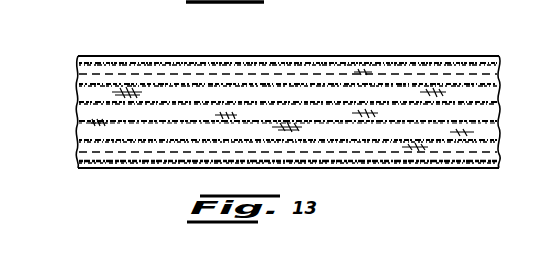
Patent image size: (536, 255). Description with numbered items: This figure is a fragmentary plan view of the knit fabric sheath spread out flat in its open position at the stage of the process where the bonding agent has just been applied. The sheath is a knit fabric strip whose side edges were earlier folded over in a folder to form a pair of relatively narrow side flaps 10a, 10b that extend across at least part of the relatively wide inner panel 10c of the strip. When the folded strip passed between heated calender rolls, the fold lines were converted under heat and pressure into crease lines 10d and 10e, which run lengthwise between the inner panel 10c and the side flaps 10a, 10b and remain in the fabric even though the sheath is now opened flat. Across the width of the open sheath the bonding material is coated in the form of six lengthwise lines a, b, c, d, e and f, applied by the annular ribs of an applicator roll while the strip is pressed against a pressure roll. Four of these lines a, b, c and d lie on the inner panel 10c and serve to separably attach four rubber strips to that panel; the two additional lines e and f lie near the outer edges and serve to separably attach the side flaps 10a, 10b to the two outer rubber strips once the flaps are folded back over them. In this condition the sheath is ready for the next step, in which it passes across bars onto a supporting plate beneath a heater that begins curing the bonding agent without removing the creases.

The side flap 10a is at (137, 169).
The side flap 10b is at (158, 62).
The inner panel 10c is at (293, 92).
The crease line 10d is at (447, 152).
The crease line 10e is at (449, 73).
The line of bonding material a is at (78, 85).
The line of bonding material b is at (78, 104).
The line of bonding material c is at (78, 121).
The line of bonding material d is at (78, 141).
The line of bonding material e is at (78, 63).
The line of bonding material f is at (78, 162).